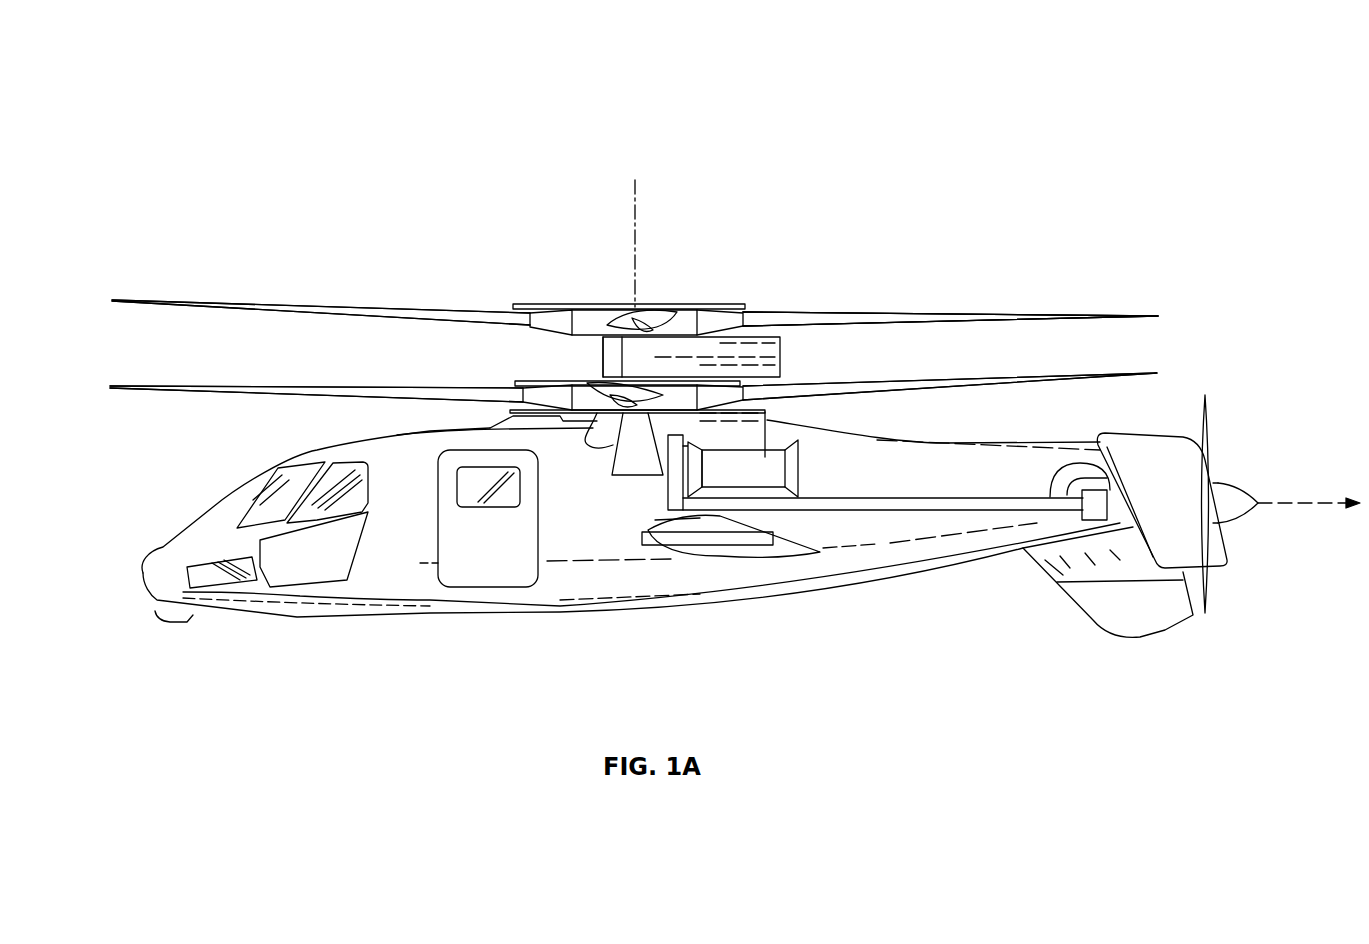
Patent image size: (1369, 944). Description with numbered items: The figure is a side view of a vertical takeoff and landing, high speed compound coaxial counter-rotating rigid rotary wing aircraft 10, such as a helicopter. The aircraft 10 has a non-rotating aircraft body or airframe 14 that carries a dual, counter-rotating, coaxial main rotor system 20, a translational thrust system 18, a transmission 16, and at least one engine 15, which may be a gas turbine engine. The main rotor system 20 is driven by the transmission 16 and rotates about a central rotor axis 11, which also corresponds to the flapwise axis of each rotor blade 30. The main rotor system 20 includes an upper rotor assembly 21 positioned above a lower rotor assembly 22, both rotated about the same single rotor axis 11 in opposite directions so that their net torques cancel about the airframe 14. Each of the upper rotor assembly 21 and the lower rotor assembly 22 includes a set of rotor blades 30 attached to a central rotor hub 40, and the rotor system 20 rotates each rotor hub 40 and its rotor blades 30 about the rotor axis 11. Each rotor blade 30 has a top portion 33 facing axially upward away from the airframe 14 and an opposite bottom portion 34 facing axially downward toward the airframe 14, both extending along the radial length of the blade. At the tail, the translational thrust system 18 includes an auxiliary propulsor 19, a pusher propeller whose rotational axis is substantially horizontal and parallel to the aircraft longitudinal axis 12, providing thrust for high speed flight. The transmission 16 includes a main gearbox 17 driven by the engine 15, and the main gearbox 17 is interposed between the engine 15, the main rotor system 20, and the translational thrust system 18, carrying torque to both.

The rotary wing aircraft 10 is at (283, 162).
The rotor axis 11 is at (635, 188).
The aircraft longitudinal axis 12 is at (1298, 505).
The airframe 14 is at (600, 613).
The engine 15 is at (775, 463).
The transmission 16 is at (627, 457).
The main gearbox 17 is at (668, 486).
The translational thrust system 18 is at (1208, 423).
The auxiliary propulsor 19 is at (1242, 490).
The main rotor system 20 is at (603, 262).
The upper rotor assembly 21 is at (207, 303).
The lower rotor assembly 22 is at (185, 393).
The rotor blade 30 is at (330, 307).
The top portion 33 is at (883, 313).
The bottom portion 34 is at (907, 327).
The central rotor hub 40 is at (586, 304).